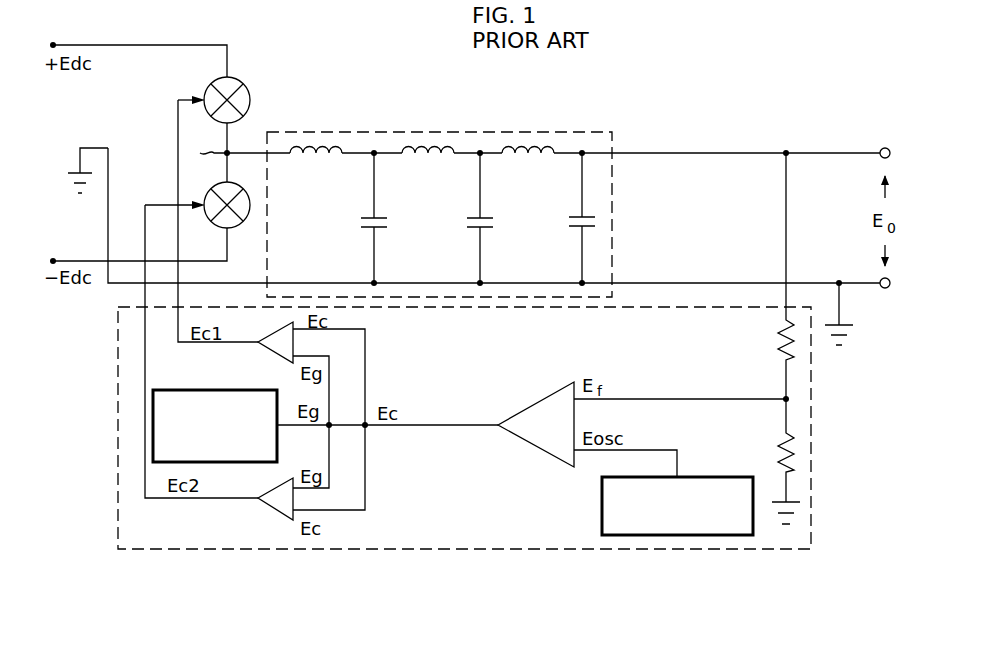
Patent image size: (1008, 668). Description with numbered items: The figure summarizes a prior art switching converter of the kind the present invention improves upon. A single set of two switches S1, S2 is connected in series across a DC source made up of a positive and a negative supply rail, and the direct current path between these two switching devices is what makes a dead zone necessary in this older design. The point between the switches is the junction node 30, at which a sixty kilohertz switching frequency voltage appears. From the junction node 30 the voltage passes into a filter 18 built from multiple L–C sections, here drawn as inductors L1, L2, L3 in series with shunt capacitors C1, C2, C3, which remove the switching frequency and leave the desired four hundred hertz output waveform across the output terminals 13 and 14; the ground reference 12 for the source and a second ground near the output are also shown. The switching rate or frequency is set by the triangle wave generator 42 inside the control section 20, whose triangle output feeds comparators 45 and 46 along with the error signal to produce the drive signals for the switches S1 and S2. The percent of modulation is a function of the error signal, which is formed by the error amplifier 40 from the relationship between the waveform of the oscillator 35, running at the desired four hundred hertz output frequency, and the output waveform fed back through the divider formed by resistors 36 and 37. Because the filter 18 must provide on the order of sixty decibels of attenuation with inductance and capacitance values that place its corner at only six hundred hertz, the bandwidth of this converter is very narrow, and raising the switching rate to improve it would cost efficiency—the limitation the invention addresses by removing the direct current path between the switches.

The ground reference 12 is at (91, 153).
The output terminal 13 is at (885, 148).
The output terminal 14 is at (885, 290).
The filter 18 is at (553, 205).
The control circuit 20 is at (815, 522).
The junction node 30 is at (208, 163).
The oscillator 35 is at (600, 492).
The feedback resistor 36 is at (780, 337).
The feedback resistor 37 is at (776, 440).
The error amplifier 40 is at (532, 405).
The triangle wave generator 42 is at (207, 390).
The comparator 45 is at (279, 352).
The comparator 46 is at (272, 512).
The switch S1 is at (251, 104).
The switch S2 is at (202, 195).
The inductor L1 is at (316, 163).
The inductor L2 is at (428, 163).
The inductor L3 is at (528, 163).
The capacitor C1 is at (390, 218).
The capacitor C2 is at (497, 218).
The capacitor C3 is at (588, 218).